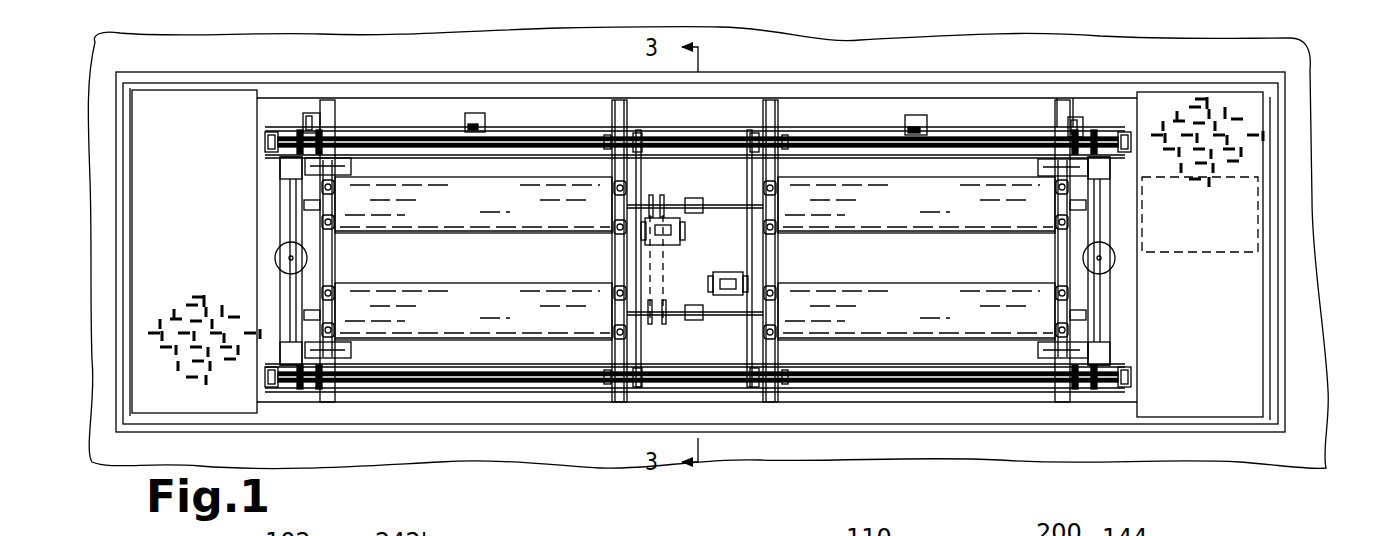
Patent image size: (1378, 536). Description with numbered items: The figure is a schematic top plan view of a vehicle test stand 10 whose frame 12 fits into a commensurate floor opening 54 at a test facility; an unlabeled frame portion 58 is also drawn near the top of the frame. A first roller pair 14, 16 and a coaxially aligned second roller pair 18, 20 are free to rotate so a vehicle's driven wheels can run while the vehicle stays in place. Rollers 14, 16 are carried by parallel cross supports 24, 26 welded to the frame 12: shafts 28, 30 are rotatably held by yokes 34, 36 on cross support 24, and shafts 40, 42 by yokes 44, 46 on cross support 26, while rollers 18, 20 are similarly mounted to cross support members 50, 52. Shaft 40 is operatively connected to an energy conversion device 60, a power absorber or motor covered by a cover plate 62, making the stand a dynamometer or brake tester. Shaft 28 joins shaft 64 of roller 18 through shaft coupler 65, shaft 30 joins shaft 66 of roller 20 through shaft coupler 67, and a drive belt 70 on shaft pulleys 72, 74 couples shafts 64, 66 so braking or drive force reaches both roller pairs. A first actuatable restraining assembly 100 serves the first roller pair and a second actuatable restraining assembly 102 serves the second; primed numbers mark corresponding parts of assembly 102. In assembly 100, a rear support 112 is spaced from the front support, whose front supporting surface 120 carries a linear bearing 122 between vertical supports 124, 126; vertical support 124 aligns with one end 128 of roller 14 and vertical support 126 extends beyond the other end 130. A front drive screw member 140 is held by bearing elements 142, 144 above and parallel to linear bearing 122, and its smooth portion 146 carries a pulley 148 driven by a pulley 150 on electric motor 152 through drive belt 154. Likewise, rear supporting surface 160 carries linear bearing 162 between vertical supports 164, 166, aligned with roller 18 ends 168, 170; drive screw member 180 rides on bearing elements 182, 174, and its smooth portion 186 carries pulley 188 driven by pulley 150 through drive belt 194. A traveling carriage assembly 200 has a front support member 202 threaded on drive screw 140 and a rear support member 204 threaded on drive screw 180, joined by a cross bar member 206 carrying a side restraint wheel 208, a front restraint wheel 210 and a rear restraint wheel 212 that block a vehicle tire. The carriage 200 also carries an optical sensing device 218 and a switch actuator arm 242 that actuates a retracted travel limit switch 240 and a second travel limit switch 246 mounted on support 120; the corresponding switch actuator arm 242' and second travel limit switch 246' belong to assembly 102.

The vehicle test stand 10 is at (1031, 38).
The frame 12 is at (849, 88).
The roller 14 is at (925, 230).
The roller 16 is at (952, 300).
The roller 18 is at (463, 213).
The roller 20 is at (434, 300).
The cross support 24 is at (773, 167).
The cross support 26 is at (1063, 110).
The shaft 28 is at (763, 213).
The shaft 30 is at (765, 320).
The yoke 34 is at (762, 205).
The yoke 36 is at (780, 306).
The shaft 40 is at (1080, 204).
The shaft 42 is at (1086, 315).
The yoke 44 is at (1058, 205).
The yoke 46 is at (1058, 318).
The cross support member 50 is at (331, 258).
The cross support member 52 is at (623, 260).
The floor opening 54 is at (1285, 176).
The frame top wall 58 is at (935, 91).
The energy conversion device 60 is at (1240, 257).
The cover plate 62 is at (1250, 117).
The shaft 64 is at (634, 206).
The shaft coupler 65 is at (694, 198).
The shaft 66 is at (639, 318).
The shaft coupler 67 is at (694, 321).
The drive belt 70 is at (652, 279).
The shaft pulley 72 is at (613, 215).
The shaft pulley 74 is at (613, 306).
The first actuatable restraining assembly 100 is at (1086, 115).
The second actuatable restraining assembly 102 is at (276, 204).
The rear support 112 is at (917, 408).
The front supporting surface 120 is at (939, 136).
The linear bearing 122 is at (822, 140).
The vertical support 124 is at (791, 128).
The vertical support 126 is at (1195, 118).
The end of roller 128 is at (781, 202).
The end of roller 130 is at (1010, 218).
The front drive screw member 140 is at (922, 144).
The bearing element 142 is at (770, 128).
The bearing element 144 is at (1082, 168).
The smooth portion 146 is at (748, 128).
The pulley 148 is at (757, 143).
The pulley 150 is at (776, 270).
The electric motor 152 is at (728, 272).
The drive belt 154 is at (748, 172).
The rear supporting surface 160 is at (988, 394).
The linear bearing 162 is at (902, 369).
The vertical support 164 is at (788, 368).
The vertical support 166 is at (1125, 371).
The end of roller 168 is at (778, 292).
The end of roller 170 is at (1019, 272).
The bearing element 174 is at (1122, 385).
The drive screw member 180 is at (977, 376).
The bearing element 182 is at (793, 393).
The smooth portion 186 is at (773, 388).
The pulley 188 is at (748, 377).
The drive belt 194 is at (790, 354).
The carriage assembly 200 is at (1122, 299).
The front support member 202 is at (1100, 130).
The rear support member 204 is at (1086, 386).
The cross bar member 206 is at (1098, 287).
The side restraint wheel 208 is at (1014, 247).
The front restraint wheel 210 is at (1040, 168).
The rear restraint wheel 212 is at (1120, 357).
The optical sensing device 218 is at (1015, 155).
The retracted travel limit switch 240 is at (1080, 117).
The switch actuator arm 242 is at (1159, 68).
The switch actuator arm 242' is at (300, 69).
The second travel limit switch 246 is at (891, 117).
The second travel limit switch 246' is at (518, 116).